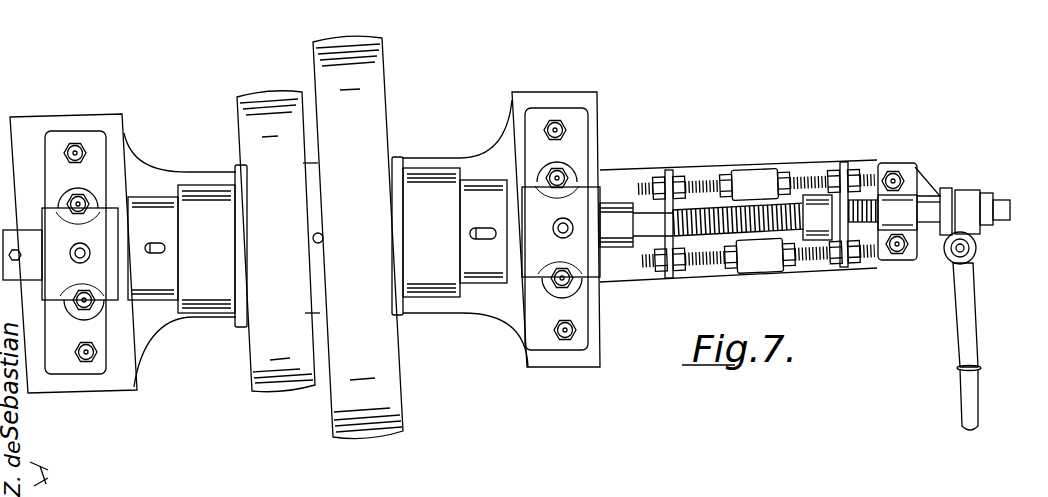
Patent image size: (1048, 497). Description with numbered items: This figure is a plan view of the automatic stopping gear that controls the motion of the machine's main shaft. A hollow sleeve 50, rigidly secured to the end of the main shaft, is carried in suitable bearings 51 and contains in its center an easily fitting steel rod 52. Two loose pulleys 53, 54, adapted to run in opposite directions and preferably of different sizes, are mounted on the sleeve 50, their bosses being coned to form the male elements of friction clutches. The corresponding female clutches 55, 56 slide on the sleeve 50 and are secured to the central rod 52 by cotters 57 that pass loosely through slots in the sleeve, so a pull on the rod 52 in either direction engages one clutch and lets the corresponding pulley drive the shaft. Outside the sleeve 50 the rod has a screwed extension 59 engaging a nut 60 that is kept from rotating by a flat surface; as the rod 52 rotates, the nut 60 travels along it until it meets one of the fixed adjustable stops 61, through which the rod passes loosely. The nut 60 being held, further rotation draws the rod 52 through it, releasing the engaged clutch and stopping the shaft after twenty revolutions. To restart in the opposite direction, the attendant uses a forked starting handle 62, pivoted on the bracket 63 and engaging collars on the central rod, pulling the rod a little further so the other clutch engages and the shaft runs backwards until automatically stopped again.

The sleeve 50 is at (40, 281).
The bearings 51 is at (572, 193).
The steel rod 52 is at (648, 233).
The loose pulley 53 is at (262, 100).
The loose pulley 54 is at (377, 82).
The female clutch 55 is at (187, 246).
The female clutch 56 is at (449, 236).
The cotters 57 is at (159, 256).
The extension 59 is at (718, 206).
The nut 60 is at (823, 240).
The adjustable stops 61 is at (672, 280).
The starting handle 62 is at (962, 327).
The bracket 63 is at (977, 252).